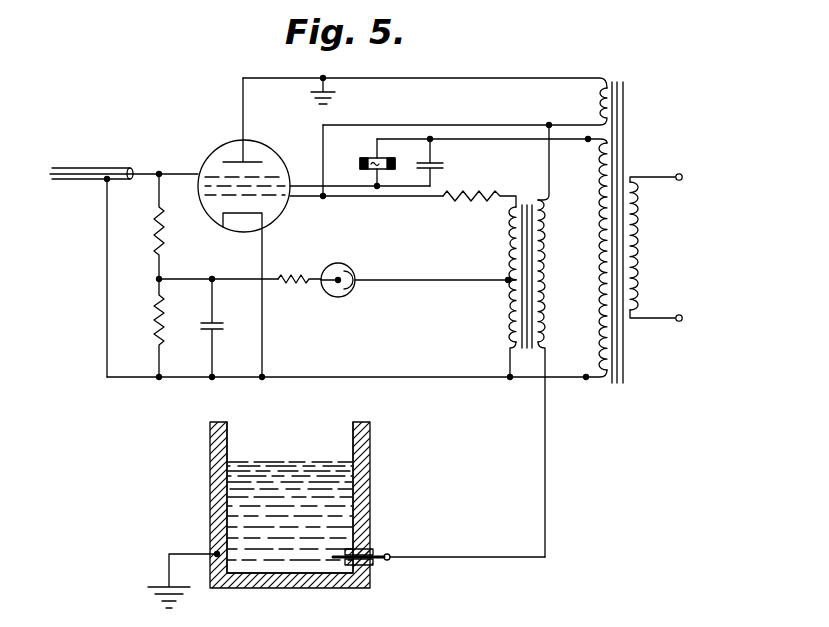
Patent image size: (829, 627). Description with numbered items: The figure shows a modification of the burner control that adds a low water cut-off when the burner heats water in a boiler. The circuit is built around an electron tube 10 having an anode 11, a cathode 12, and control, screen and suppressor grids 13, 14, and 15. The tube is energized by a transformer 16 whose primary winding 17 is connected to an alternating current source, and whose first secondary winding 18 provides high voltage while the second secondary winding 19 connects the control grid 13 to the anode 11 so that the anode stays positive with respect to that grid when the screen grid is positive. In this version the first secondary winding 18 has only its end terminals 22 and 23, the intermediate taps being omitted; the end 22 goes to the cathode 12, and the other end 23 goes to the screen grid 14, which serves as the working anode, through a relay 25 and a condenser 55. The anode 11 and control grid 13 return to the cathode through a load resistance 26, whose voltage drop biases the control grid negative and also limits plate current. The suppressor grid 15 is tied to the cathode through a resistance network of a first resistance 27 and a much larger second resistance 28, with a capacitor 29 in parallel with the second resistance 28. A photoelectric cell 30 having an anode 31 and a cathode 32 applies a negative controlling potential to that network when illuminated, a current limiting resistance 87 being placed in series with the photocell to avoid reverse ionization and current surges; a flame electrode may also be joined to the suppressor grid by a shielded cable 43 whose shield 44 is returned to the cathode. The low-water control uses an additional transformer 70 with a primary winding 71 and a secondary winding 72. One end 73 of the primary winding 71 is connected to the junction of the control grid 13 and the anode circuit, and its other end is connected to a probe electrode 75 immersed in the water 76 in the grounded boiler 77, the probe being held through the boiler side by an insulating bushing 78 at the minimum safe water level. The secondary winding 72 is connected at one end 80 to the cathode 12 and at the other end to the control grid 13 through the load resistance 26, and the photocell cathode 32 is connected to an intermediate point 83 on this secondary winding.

The electron tube 10 is at (214, 152).
The anode 11 is at (265, 161).
The cathode 12 is at (234, 215).
The control grid 13 is at (284, 196).
The screen grid 14 is at (285, 186).
The suppressor grid 15 is at (206, 178).
The transformer 16 is at (624, 148).
The primary winding 17 is at (646, 254).
The first secondary winding 18 is at (590, 255).
The second secondary winding 19 is at (593, 104).
The end of first secondary winding 22 is at (587, 379).
The other end of first secondary winding 23 is at (588, 142).
The relay 25 is at (372, 157).
The load resistance 26 is at (478, 204).
The first resistance 27 is at (157, 228).
The second resistance 28 is at (157, 305).
The capacitor 29 is at (212, 327).
The photoelectric cell 30 is at (350, 264).
The photocell anode 31 is at (326, 270).
The photocell cathode 32 is at (352, 275).
The shielded cable 43 is at (90, 168).
The shield 44 is at (90, 182).
The condenser 55 is at (443, 166).
The additional transformer 70 is at (527, 178).
The primary winding of additional transformer 71 is at (548, 240).
The secondary winding of additional transformer 72 is at (503, 295).
The end of primary winding 73 is at (547, 125).
The probe electrode 75 is at (374, 563).
The water 76 is at (288, 460).
The boiler 77 is at (210, 465).
The insulating bushing 78 is at (382, 555).
The end of secondary winding 80 is at (508, 376).
The intermediate point 83 is at (507, 280).
The current limiting resistance 87 is at (310, 290).